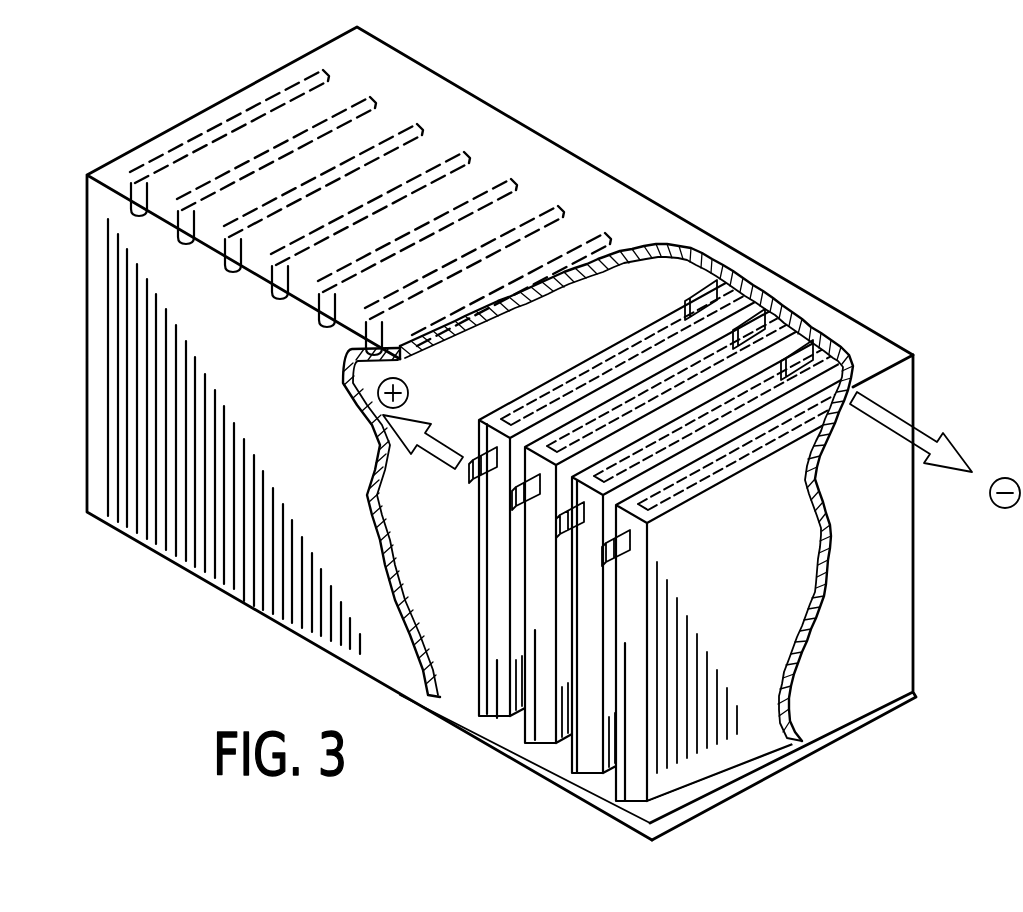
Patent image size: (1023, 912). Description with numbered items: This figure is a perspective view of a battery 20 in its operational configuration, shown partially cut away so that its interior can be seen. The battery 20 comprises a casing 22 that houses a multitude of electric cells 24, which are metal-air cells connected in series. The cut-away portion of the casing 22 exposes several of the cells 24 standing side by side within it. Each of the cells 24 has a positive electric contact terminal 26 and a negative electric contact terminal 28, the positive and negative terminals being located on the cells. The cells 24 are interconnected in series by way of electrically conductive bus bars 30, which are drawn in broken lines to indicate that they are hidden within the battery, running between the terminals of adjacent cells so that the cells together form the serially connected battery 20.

The battery 20 is at (866, 250).
The casing 22 is at (668, 217).
The electric cells 24 is at (577, 745).
The positive electric contact terminal 26 is at (555, 524).
The negative electric contact terminal 28 is at (800, 357).
The bus bars 30 is at (425, 123).